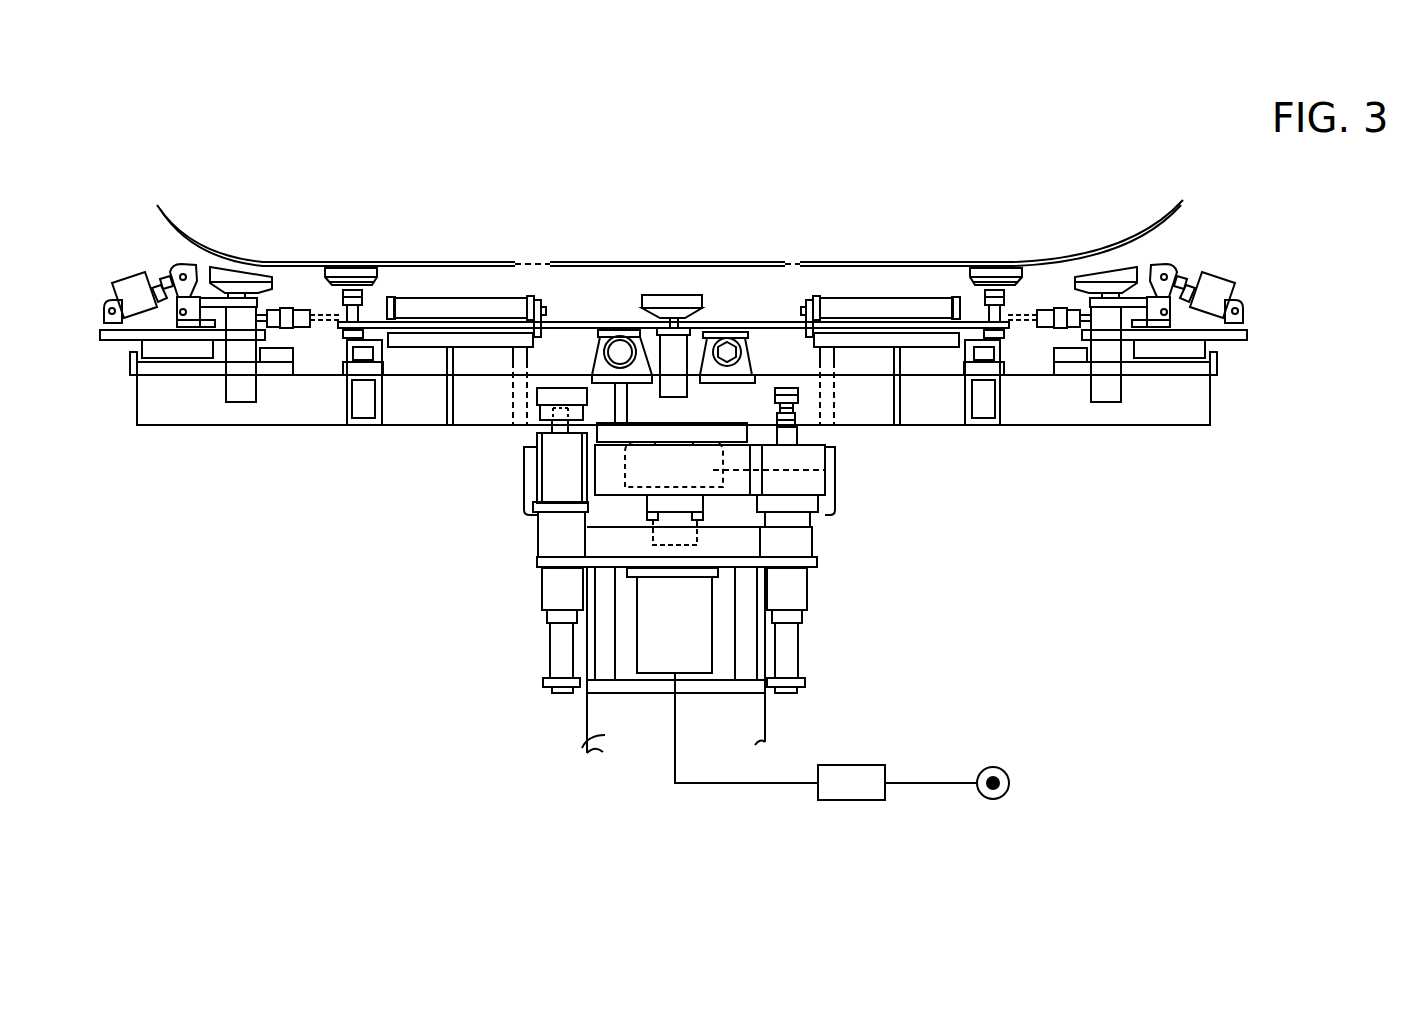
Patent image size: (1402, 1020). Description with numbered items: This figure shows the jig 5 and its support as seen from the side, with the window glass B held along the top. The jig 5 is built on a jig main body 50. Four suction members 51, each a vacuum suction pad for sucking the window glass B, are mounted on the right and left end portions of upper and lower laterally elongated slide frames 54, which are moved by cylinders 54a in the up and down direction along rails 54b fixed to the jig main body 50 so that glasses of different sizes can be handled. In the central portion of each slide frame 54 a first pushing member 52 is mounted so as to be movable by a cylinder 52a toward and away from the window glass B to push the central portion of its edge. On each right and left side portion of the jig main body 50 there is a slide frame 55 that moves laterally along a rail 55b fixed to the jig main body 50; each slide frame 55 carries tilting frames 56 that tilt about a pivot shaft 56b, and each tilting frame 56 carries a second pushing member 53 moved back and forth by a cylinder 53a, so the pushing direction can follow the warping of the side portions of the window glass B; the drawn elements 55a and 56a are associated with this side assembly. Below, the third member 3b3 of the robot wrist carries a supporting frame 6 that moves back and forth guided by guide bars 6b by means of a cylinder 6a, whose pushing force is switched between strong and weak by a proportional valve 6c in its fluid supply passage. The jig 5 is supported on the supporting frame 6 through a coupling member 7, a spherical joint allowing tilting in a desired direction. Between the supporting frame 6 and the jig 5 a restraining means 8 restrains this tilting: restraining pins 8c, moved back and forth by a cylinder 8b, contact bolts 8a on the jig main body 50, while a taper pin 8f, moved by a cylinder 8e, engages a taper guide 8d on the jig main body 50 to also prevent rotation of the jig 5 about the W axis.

The window glass B is at (940, 258).
The jig main body 50 is at (450, 420).
The slide frame 55 is at (118, 342).
The cylinder 55a is at (457, 308).
The rail 55b is at (280, 364).
The tilting frame 56 is at (186, 298).
The cylinder actuator 56a is at (138, 284).
The pivot shaft 56b is at (184, 328).
The second pushing member 53 is at (248, 278).
The cylinder 53a is at (242, 392).
The suction member 51 is at (352, 272).
The slide frame 54 is at (800, 323).
The cylinder 54a is at (620, 350).
The rail 54b is at (363, 367).
The first pushing member 52 is at (681, 300).
The cylinder 52a is at (680, 352).
The restraining means 8 is at (510, 480).
The contact bolt 8a is at (776, 392).
The cylinder 8b is at (812, 500).
The restraining pin 8c is at (797, 437).
The taper guide 8d is at (537, 412).
The cylinder 8e is at (546, 540).
The taper pin 8f is at (548, 428).
The coupling member 7 is at (806, 478).
The jig 5 is at (899, 450).
The supporting frame 6 is at (598, 677).
The cylinder 6a is at (660, 662).
The guide bar 6b is at (560, 648).
The proportional valve 6c is at (866, 768).
The third member 3b3 is at (607, 738).